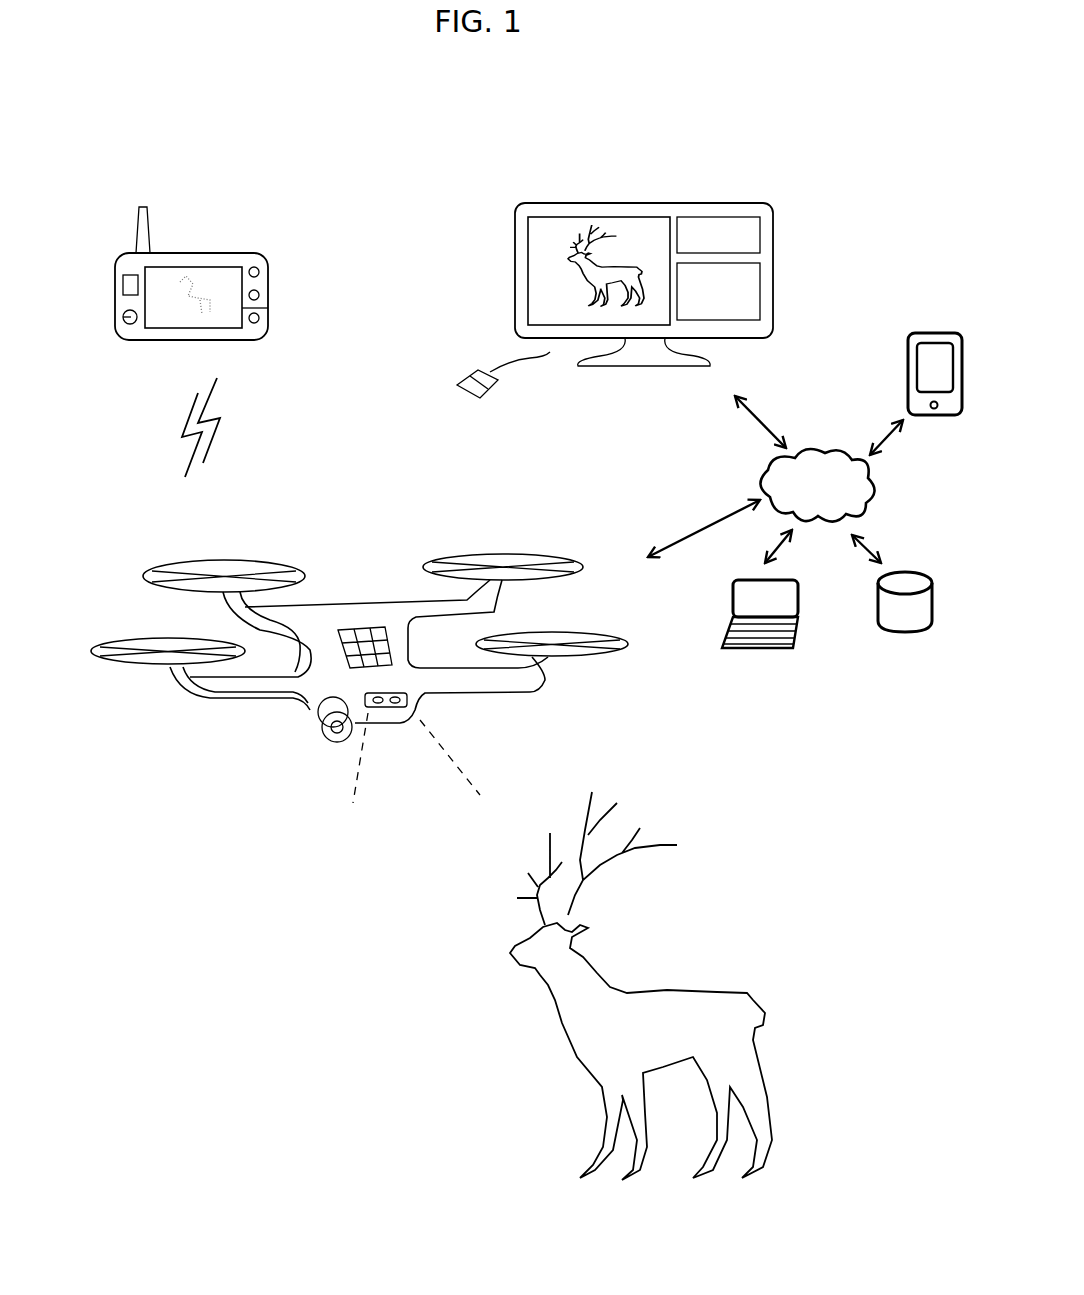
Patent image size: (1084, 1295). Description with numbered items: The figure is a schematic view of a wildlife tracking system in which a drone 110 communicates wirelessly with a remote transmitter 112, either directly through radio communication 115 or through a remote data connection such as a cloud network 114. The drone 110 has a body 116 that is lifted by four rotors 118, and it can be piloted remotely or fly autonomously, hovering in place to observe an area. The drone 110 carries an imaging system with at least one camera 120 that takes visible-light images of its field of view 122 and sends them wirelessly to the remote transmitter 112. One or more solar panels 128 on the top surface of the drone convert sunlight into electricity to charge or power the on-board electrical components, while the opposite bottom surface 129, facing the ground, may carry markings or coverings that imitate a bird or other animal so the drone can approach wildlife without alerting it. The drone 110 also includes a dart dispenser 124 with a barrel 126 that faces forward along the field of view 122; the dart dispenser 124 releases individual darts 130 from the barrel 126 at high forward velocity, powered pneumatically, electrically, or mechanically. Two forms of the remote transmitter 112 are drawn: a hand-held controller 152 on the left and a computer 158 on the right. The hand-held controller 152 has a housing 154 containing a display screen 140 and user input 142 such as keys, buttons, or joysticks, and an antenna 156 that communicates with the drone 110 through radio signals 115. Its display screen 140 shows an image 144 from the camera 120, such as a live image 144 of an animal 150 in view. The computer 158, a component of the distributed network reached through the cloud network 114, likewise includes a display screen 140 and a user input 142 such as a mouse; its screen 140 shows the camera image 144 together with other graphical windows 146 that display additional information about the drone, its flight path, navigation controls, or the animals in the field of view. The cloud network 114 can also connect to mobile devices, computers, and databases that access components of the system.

The drone 110 is at (347, 670).
The remote transmitter 112 is at (245, 186).
The cloud network 114 is at (805, 490).
The radio communication 115 is at (242, 418).
The body 116 is at (395, 600).
The rotors 118 is at (198, 557).
The camera 120 is at (398, 713).
The field of view 122 is at (457, 760).
The dart dispenser 124 is at (317, 732).
The barrel 126 is at (312, 713).
The solar panels 128 is at (370, 640).
The bottom surface 129 is at (422, 645).
The darts 130 is at (347, 748).
The display screen 140 is at (243, 308).
The user input 142 is at (120, 288).
The image 144 is at (212, 278).
The graphical windows 146 is at (747, 228).
The animal 150 is at (548, 248).
The hand-held controller 152 is at (100, 266).
The housing 154 is at (270, 262).
The antenna 156 is at (140, 207).
The computer 158 is at (790, 170).